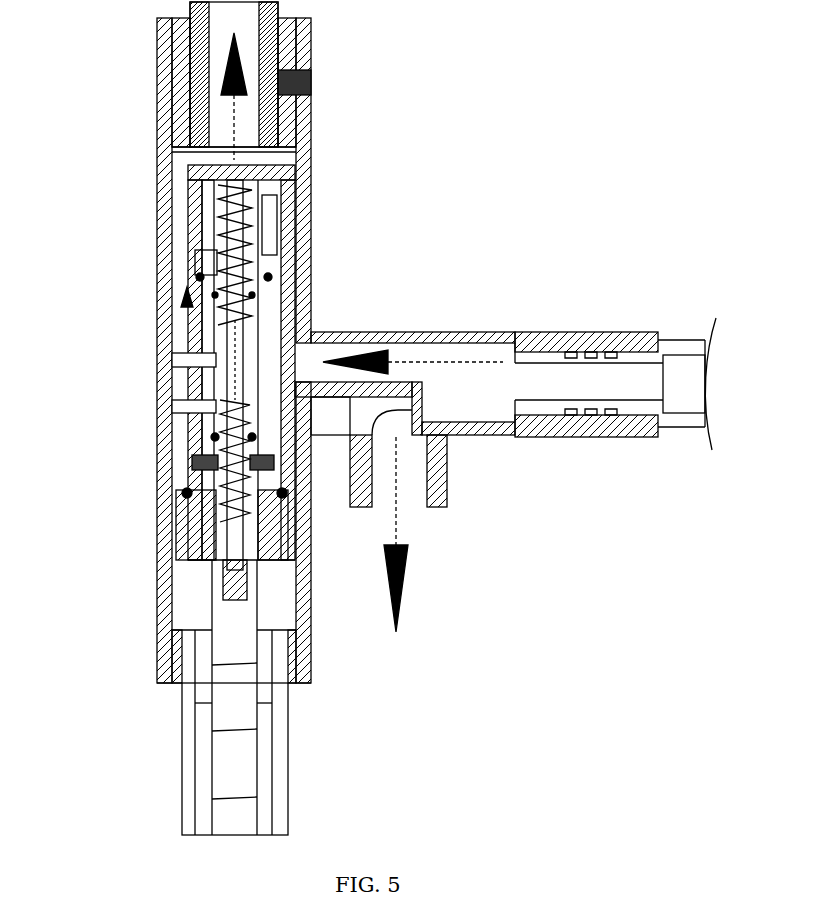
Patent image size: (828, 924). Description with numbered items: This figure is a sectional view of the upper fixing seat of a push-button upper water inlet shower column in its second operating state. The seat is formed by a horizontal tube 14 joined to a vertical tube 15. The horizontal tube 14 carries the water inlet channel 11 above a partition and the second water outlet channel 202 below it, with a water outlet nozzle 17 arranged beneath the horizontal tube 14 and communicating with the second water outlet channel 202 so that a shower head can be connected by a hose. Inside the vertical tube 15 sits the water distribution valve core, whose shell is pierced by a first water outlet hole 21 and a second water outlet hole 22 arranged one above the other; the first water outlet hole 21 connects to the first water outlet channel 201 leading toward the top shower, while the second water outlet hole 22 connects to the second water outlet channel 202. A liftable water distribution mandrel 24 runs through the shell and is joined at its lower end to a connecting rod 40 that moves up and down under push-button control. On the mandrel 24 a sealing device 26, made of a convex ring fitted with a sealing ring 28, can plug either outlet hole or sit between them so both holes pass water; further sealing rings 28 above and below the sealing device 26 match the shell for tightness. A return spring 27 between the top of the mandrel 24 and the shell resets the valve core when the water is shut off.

The vertical tube 15 is at (168, 103).
The return spring 27 is at (172, 208).
The first water outlet channel 201 is at (187, 261).
The first water outlet hole 21 is at (193, 330).
The sealing device 26 is at (217, 358).
The water distribution mandrel 24 is at (210, 412).
The sealing ring 28 is at (197, 440).
The second water outlet hole 22 is at (275, 300).
The second water outlet channel 202 is at (325, 415).
The water inlet channel 11 is at (412, 355).
The horizontal tube 14 is at (577, 333).
The water outlet nozzle 17 is at (412, 472).
The connecting rod 40 is at (232, 703).